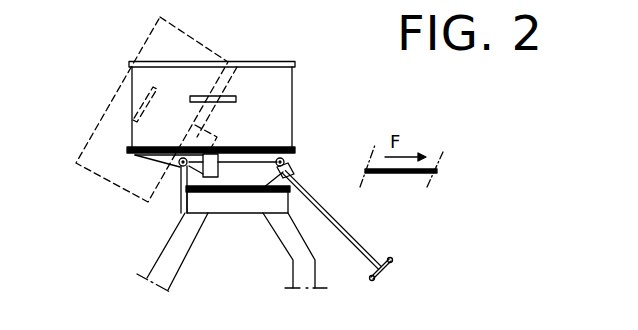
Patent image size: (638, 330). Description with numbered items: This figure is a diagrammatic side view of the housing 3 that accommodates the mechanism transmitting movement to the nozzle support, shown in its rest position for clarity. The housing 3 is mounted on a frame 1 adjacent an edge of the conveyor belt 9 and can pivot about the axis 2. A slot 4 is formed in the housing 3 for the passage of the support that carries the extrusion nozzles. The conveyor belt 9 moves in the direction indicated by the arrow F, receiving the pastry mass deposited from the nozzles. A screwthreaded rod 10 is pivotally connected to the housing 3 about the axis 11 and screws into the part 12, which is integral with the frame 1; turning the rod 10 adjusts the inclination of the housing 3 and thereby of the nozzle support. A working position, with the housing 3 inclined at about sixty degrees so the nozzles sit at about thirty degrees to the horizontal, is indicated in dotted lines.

The frame 1 is at (292, 254).
The axis 2 is at (179, 168).
The housing 3 is at (283, 115).
The slot 4 is at (233, 96).
The conveyor belt 9 is at (385, 174).
The screwthreaded rod 10 is at (355, 232).
The axis 11 is at (286, 160).
The part 12 is at (288, 176).